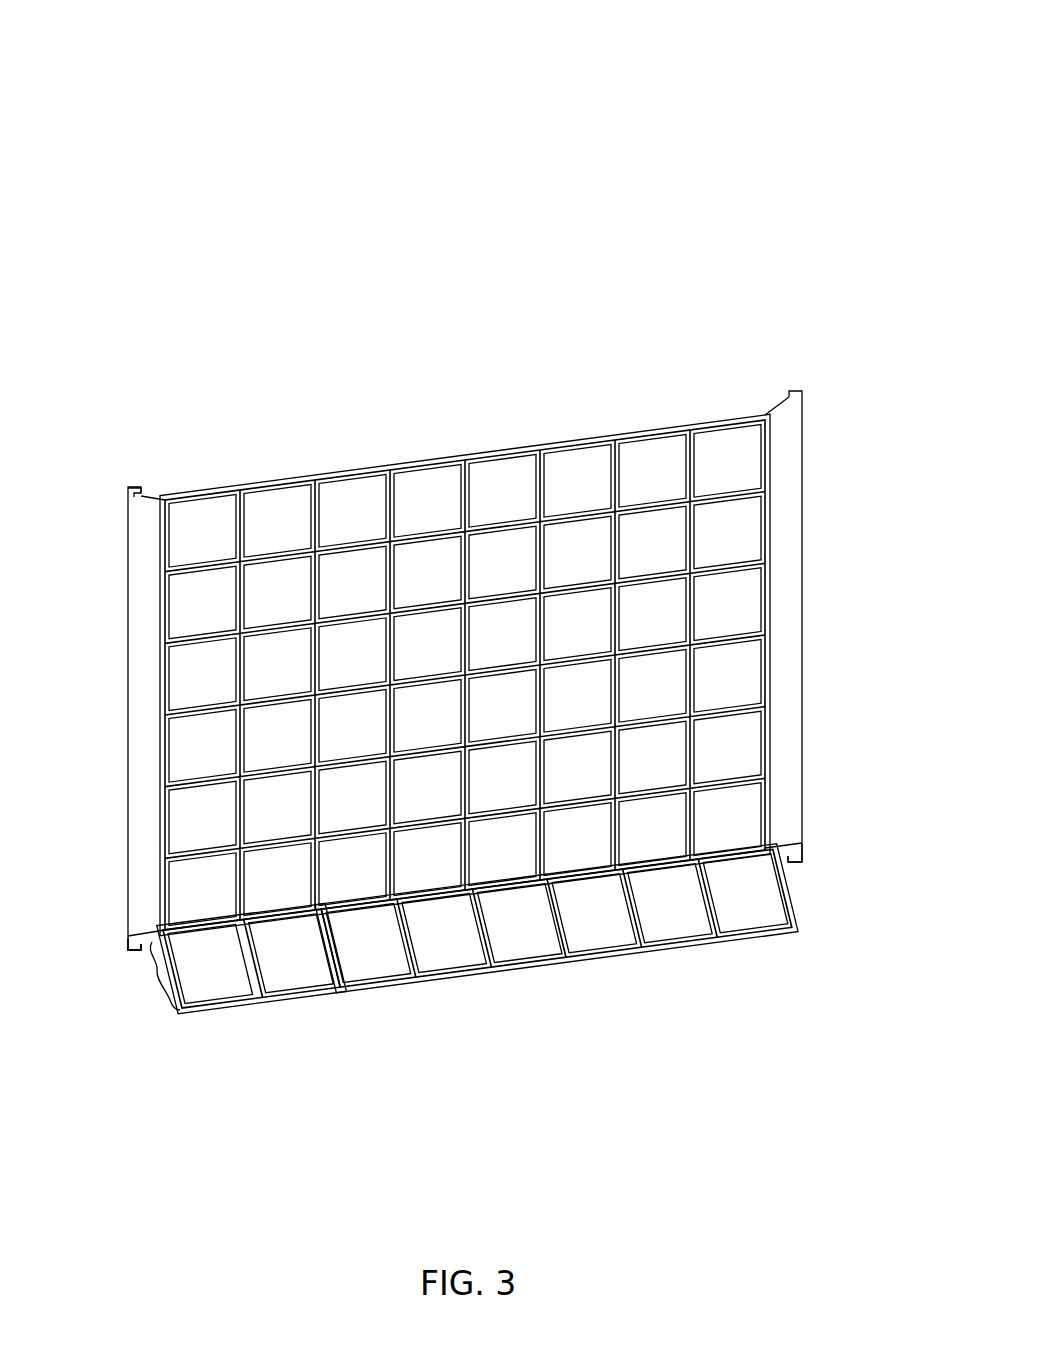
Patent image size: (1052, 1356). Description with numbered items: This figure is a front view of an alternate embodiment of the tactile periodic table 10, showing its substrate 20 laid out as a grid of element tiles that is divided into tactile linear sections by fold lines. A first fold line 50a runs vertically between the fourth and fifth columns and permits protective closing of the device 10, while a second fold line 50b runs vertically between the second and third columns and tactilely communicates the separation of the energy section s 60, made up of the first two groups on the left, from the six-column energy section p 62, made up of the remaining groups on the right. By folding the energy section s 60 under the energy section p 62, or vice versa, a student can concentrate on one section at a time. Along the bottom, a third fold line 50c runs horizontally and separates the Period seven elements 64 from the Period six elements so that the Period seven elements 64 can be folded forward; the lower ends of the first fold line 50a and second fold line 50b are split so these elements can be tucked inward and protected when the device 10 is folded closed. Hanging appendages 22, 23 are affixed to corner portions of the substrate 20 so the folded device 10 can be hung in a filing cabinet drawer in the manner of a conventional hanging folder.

The tactile periodic table 10 is at (115, 181).
The substrate 20 is at (571, 436).
The hanging appendage 22 is at (127, 499).
The hanging appendage 23 is at (136, 490).
The first fold line 50a is at (463, 447).
The second fold line 50b is at (312, 478).
The third fold line 50c is at (810, 841).
The energy section s 60 is at (329, 1008).
The energy section p 62 is at (780, 920).
The Period 7 elements 64 is at (152, 985).